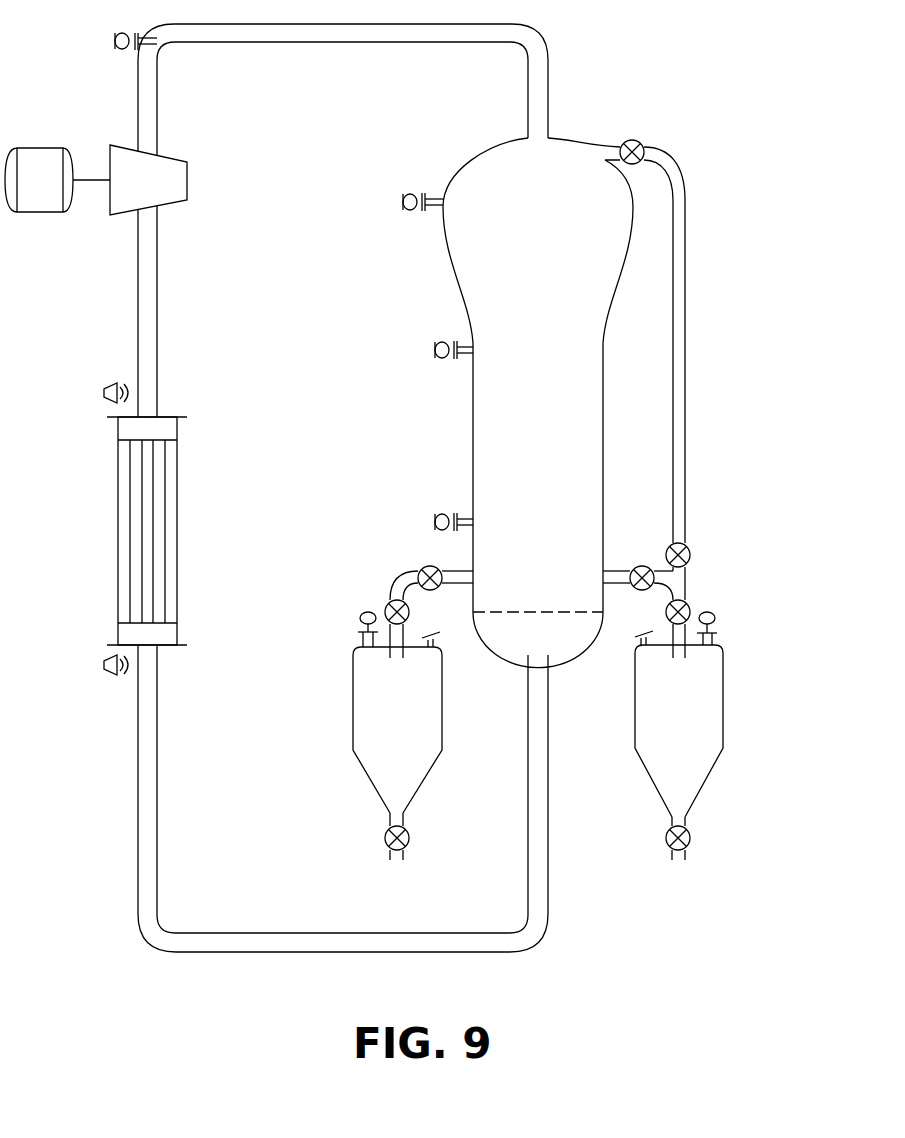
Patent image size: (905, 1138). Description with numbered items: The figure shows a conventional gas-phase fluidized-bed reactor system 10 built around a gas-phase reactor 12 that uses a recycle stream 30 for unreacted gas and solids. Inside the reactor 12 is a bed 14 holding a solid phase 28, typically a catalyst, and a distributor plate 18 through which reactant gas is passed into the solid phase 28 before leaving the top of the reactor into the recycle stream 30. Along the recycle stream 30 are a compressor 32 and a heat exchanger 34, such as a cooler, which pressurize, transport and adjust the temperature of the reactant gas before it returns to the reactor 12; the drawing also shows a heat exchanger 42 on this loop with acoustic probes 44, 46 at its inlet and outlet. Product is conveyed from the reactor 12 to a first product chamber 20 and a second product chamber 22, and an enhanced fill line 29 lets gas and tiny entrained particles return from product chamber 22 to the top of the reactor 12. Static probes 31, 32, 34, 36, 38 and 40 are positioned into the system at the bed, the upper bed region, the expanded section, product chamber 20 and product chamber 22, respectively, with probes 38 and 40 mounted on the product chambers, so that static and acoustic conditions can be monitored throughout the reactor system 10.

The gas-phase fluidized-bed reactor system 10 is at (708, 322).
The gas-phase reactor 12 is at (541, 403).
The bed 14 is at (556, 479).
The distributor plate 18 is at (553, 612).
The first product chamber 20 is at (353, 735).
The second product chamber 22 is at (723, 718).
The solid phase 28 is at (575, 520).
The enhanced fill line 29 is at (685, 398).
The recycle stream 30 is at (138, 272).
The static probe 31 is at (115, 41).
The compressor 32 is at (114, 147).
The heat exchanger 34 is at (435, 350).
The static probe 36 is at (403, 202).
The static probe 38 is at (368, 612).
The static probe 40 is at (715, 615).
The heat exchanger 42 is at (118, 512).
The sensor 44 is at (104, 393).
The sensor 46 is at (104, 665).